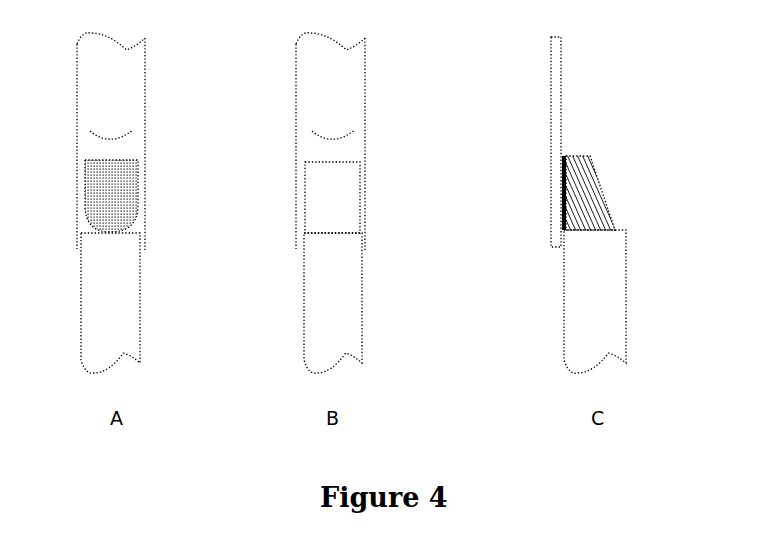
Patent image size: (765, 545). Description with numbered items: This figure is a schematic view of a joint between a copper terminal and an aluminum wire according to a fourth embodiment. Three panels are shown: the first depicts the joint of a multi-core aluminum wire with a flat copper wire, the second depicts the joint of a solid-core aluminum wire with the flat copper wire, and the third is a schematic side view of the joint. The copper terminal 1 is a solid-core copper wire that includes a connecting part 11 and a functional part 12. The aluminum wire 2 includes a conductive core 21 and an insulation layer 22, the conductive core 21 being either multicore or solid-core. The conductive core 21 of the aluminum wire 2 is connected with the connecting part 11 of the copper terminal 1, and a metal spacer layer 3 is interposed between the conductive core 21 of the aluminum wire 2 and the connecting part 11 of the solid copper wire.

The copper terminal 1 is at (110, 79).
The functional part 12 is at (121, 113).
The connecting part 11 is at (121, 153).
The conductive core 21 is at (108, 195).
The metal spacer layer 3 is at (136, 222).
The insulation layer 22 is at (121, 283).
The aluminum wire 2 is at (121, 323).